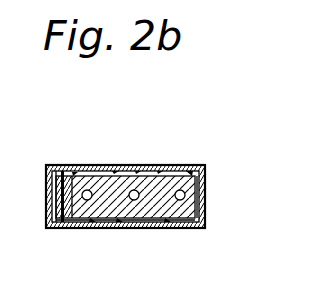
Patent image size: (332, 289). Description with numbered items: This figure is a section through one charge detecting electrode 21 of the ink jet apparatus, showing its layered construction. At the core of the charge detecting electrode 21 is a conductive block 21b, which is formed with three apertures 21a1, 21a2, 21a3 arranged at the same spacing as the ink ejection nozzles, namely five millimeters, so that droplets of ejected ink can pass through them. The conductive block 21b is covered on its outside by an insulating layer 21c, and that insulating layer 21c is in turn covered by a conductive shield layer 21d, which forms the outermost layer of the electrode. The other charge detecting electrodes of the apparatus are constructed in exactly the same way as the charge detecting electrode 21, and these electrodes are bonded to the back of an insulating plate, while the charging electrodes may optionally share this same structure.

The charge detecting electrode 21 is at (128, 165).
The aperture 21a1 is at (194, 186).
The aperture 21a2 is at (152, 170).
The aperture 21a3 is at (87, 153).
The conductive block 21b is at (196, 204).
The insulating layer 21c is at (177, 228).
The conductive shield layer 21d is at (116, 228).